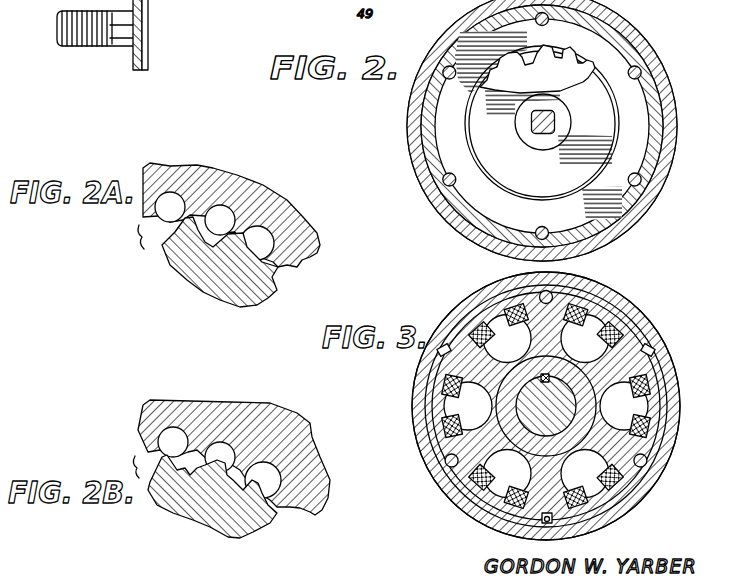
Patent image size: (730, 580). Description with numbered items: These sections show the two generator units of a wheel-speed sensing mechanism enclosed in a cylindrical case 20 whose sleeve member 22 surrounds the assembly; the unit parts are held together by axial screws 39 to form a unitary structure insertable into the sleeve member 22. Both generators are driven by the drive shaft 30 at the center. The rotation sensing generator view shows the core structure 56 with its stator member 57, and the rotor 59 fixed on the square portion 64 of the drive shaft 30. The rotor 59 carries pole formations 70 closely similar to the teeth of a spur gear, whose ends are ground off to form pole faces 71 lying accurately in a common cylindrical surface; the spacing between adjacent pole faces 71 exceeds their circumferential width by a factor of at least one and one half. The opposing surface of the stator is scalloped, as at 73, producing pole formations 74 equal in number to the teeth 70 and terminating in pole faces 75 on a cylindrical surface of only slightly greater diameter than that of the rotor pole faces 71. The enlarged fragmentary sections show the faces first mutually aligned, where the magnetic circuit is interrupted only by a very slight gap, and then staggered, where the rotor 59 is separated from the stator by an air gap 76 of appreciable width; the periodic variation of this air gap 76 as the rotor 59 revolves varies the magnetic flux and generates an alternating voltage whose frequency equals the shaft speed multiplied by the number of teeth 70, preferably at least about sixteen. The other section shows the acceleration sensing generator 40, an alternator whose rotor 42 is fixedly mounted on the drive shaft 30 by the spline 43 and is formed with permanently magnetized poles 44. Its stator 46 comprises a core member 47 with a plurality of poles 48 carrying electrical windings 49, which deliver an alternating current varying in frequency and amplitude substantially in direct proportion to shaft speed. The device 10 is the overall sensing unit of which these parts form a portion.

In FIG. 2, the motor assembly 10 is at (545, 48).
In FIG. 2, the cylindrical case 20 is at (653, 222).
In FIG. 3, the cylindrical case 20 is at (690, 400).
In FIG. 2, the sleeve member 22 is at (668, 160).
In FIG. 3, the sleeve member 22 is at (655, 347).
In FIG. 2, the drive shaft 30 is at (557, 126).
In FIG. 3, the drive shaft 30 is at (562, 418).
In FIG. 2, the axial screws 39 is at (636, 173).
In FIG. 3, the acceleration sensing generator 40 is at (459, 412).
In FIG. 3, the rotor 42 is at (497, 512).
In FIG. 3, the spline 43 is at (552, 378).
In FIG. 3, the poles 44 is at (483, 370).
In FIG. 3, the stator 46 is at (450, 316).
In FIG. 3, the core member 47 is at (633, 326).
In FIG. 3, the poles 48 is at (630, 462).
In FIG. 3, the electrical windings 49 is at (480, 472).
In FIG. 2, the core structure 56 is at (645, 93).
In FIG. 2A, the core structure 56 is at (329, 224).
In FIG. 2B, the core structure 56 is at (238, 399).
In FIG. 2, the stator member 57 is at (450, 157).
In FIG. 2, the rotor 59 is at (598, 115).
In FIG. 2A, the rotor 59 is at (221, 316).
In FIG. 2B, the rotor 59 is at (240, 548).
In FIG. 2, the square portion 64 is at (548, 110).
In FIG. 2A, the pole formations 70 is at (273, 282).
In FIG. 2B, the pole formations 70 is at (165, 508).
In FIG. 2A, the pole faces 71 is at (283, 212).
In FIG. 2B, the pole faces 71 is at (305, 432).
In FIG. 2, the scallops 73 is at (575, 56).
In FIG. 2A, the scallops 73 is at (252, 198).
In FIG. 2B, the scallops 73 is at (265, 407).
In FIG. 2, the pole formations 74 is at (590, 64).
In FIG. 2A, the pole formations 74 is at (208, 192).
In FIG. 2B, the pole formations 74 is at (197, 455).
In FIG. 2A, the pole faces 75 is at (167, 263).
In FIG. 2B, the pole faces 75 is at (288, 512).
In FIG. 2B, the air gap 76 is at (200, 402).